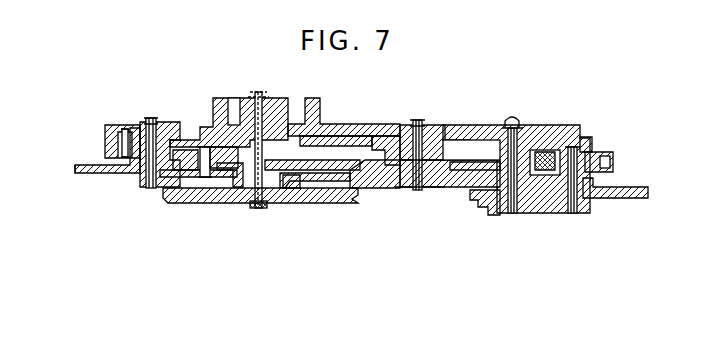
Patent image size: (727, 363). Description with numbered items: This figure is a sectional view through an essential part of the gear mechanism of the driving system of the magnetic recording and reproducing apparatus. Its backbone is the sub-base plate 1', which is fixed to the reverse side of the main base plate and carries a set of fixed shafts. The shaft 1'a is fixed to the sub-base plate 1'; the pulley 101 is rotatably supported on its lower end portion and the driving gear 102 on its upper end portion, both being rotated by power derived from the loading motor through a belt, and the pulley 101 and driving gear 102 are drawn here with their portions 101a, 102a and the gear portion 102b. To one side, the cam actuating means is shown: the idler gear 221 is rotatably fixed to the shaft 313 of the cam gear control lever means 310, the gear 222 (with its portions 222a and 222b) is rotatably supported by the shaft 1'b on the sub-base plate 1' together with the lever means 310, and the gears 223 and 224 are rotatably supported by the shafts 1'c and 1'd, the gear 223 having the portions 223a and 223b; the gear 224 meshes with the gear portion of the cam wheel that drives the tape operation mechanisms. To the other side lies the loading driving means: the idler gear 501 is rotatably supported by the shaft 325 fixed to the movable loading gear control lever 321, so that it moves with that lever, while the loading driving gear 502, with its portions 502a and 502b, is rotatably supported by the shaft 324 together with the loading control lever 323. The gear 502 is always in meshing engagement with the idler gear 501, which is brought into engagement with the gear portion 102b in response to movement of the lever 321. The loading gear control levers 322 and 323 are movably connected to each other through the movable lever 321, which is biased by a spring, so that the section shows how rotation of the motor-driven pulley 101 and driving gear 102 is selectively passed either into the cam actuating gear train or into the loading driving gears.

The pulley 101 is at (233, 204).
The base plate boss 101a is at (292, 190).
The driving gear 102 is at (197, 132).
The upper body projection 102a is at (289, 104).
The gear portion 102b is at (358, 137).
The sub-base plate 1' is at (420, 200).
The shaft 1'a is at (260, 135).
The shaft 1'b is at (434, 140).
The shaft 1'c is at (522, 151).
The shaft 1'd is at (578, 198).
The idler gear 221 is at (334, 172).
The gear 222 is at (442, 189).
The sloped member 222a is at (352, 186).
The upper block 222b is at (424, 123).
The gear 223 is at (461, 136).
The housing projection 223a is at (590, 143).
The housing bracket 223b is at (463, 190).
The gear 224 is at (608, 157).
The cam gear control lever means 310 is at (397, 132).
The shaft 313 is at (314, 172).
The loading gear control lever 321 is at (137, 172).
The loading gear control lever 322 is at (622, 198).
The loading control lever 323 is at (121, 124).
The shaft 324 is at (151, 120).
The shaft 325 is at (205, 178).
The idler gear 501 is at (182, 175).
The loading driving gear 502 is at (96, 170).
The bracket flange 502a is at (76, 168).
The bracket hook 502b is at (122, 142).